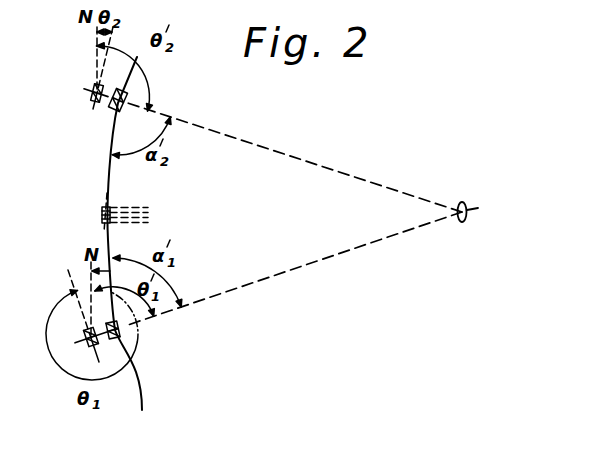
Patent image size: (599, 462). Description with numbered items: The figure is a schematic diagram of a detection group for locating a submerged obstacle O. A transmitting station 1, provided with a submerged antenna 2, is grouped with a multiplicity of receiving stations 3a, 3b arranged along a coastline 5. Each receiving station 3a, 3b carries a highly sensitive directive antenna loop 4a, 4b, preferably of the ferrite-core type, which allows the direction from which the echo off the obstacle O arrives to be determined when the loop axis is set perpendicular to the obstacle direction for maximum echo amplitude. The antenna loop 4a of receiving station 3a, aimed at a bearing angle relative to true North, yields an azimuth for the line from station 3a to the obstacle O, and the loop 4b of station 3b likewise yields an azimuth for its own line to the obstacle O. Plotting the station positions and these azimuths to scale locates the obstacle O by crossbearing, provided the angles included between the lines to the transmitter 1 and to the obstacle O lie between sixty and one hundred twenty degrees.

The transmitting station 1 is at (101, 215).
The submerged antenna 2 is at (131, 217).
The receiving station 3a is at (118, 337).
The receiving station 3b is at (127, 97).
The directive antenna loop 4a is at (88, 344).
The directive antenna loop 4b is at (94, 88).
The coastline 5 is at (117, 129).
The submerged obstacle O is at (478, 209).